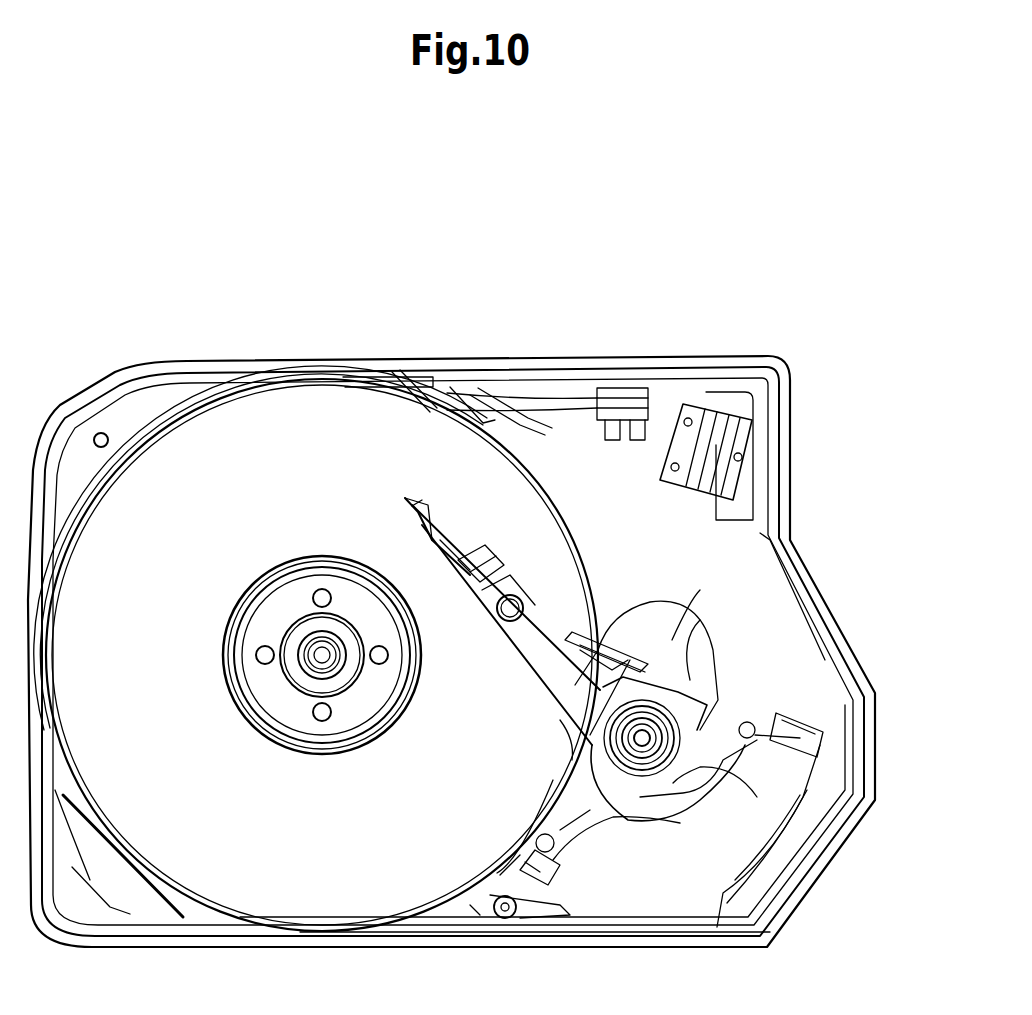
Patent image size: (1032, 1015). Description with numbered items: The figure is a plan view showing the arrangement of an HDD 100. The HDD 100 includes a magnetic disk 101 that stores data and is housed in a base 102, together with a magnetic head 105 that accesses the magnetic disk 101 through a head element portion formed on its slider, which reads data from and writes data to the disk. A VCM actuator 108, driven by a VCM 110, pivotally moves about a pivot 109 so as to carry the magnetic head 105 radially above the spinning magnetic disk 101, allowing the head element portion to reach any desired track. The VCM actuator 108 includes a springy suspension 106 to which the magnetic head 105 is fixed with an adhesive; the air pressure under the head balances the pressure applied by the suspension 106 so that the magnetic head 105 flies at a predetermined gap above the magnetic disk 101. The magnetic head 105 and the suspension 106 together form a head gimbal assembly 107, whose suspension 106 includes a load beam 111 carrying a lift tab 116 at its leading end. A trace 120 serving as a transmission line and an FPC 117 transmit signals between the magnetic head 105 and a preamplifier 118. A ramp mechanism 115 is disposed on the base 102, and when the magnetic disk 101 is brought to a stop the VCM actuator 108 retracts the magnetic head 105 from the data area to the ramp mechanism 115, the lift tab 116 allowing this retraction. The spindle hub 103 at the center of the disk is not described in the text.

The HDD 100 is at (447, 345).
The magnetic disk 101 is at (270, 410).
The base 102 is at (792, 418).
The spindle motor hub 103 is at (292, 718).
The magnetic head 105 is at (410, 524).
The suspension 106 is at (440, 540).
The head gimbal assembly 107 is at (525, 623).
The VCM actuator 108 is at (696, 704).
The pivot 109 is at (628, 738).
The VCM 110 is at (750, 825).
The load beam 111 is at (537, 675).
The ramp mechanism 115 is at (622, 392).
The lift tab 116 is at (364, 466).
The FPC 117 is at (700, 590).
The preamplifier 118 is at (730, 445).
The trace 120 is at (700, 620).